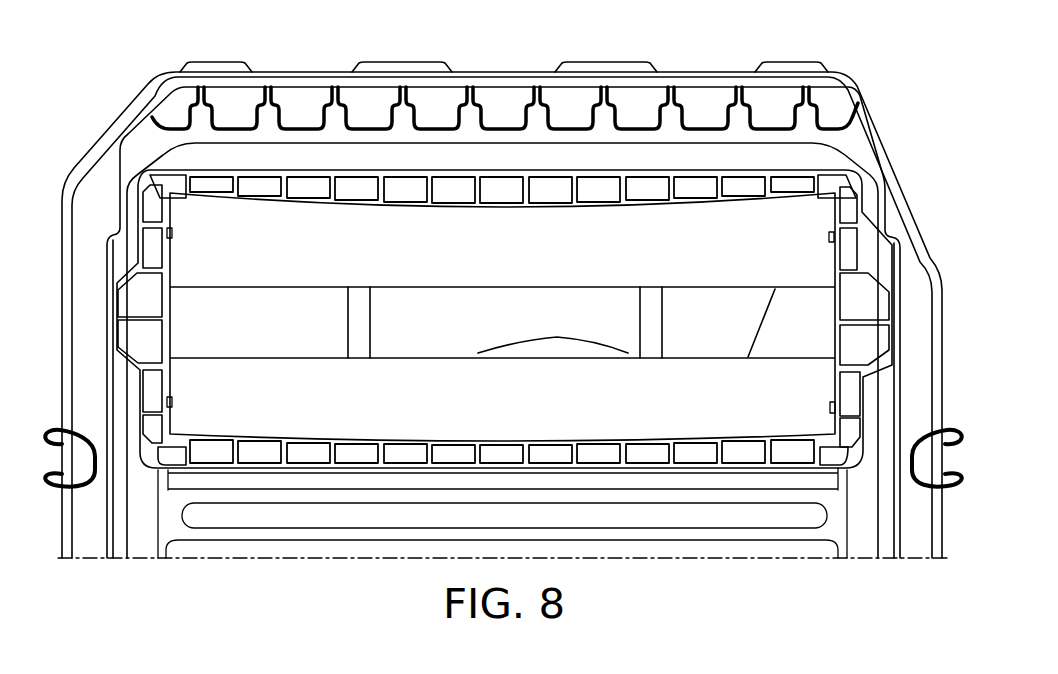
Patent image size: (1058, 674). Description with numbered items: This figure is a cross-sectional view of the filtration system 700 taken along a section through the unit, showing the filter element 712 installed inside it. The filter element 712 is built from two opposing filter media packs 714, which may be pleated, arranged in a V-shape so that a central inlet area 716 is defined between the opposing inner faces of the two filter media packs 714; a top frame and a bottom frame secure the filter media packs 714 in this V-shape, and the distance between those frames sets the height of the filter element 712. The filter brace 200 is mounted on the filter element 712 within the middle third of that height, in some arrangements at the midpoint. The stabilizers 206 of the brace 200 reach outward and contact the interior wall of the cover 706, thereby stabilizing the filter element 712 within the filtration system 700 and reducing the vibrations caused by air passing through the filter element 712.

The filtration system 700 is at (110, 75).
The filter element 712 is at (208, 248).
The cover 706 is at (862, 177).
The filter brace 200 is at (838, 264).
The stabilizers 206 is at (138, 345).
The filter media packs 714 is at (495, 264).
The central inlet area 716 is at (610, 332).